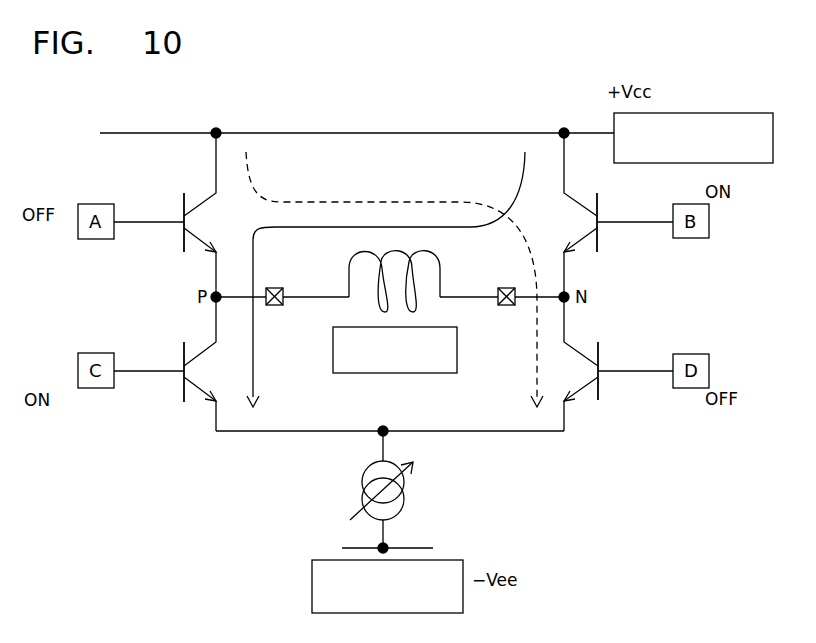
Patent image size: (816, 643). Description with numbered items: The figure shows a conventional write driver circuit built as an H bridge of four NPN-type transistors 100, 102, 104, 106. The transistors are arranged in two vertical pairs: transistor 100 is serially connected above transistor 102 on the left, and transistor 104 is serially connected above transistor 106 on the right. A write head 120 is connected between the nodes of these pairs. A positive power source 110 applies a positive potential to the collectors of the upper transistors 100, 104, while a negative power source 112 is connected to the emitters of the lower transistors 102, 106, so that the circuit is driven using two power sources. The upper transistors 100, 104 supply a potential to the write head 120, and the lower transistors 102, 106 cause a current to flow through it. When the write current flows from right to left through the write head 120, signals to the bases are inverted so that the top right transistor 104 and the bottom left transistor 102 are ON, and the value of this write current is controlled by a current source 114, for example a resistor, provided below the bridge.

The NPN-type transistor 100 is at (177, 203).
The NPN-type transistor 102 is at (177, 353).
The NPN-type transistor 104 is at (610, 200).
The NPN-type transistor 106 is at (612, 357).
The positive power source 110 is at (720, 113).
The negative power source 112 is at (318, 572).
The current source 114 is at (416, 490).
The write head 120 is at (340, 304).